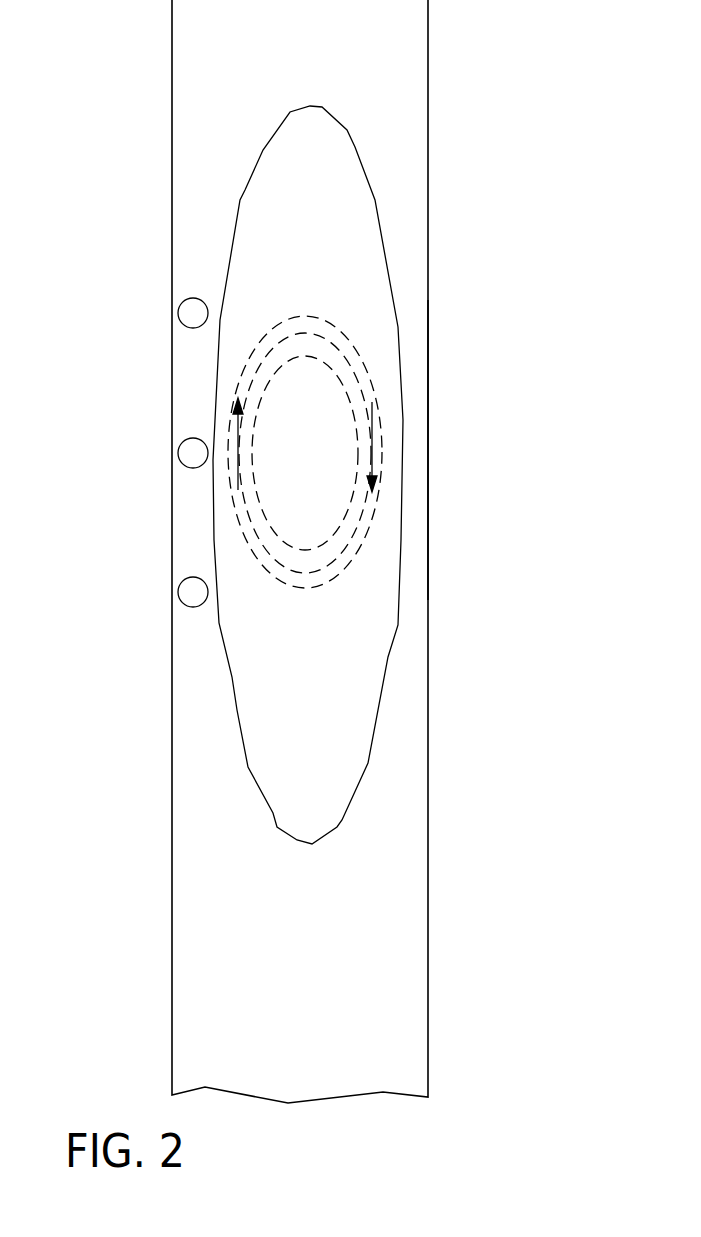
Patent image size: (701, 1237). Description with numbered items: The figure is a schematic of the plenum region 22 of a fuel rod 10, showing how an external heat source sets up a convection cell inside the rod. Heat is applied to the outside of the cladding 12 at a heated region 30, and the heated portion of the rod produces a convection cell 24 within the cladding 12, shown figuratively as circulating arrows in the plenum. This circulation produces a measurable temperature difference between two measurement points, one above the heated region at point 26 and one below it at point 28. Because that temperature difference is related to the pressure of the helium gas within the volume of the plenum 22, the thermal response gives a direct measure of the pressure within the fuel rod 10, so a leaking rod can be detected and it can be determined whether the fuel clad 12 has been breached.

The fuel rod 10 is at (453, 267).
The cladding 12 is at (428, 433).
The plenum region 22 is at (317, 265).
The convection cell 24 is at (317, 455).
The measurement point above the heated region 26 is at (184, 313).
The measurement point below the heated region 28 is at (184, 592).
The heated region 30 is at (184, 453).